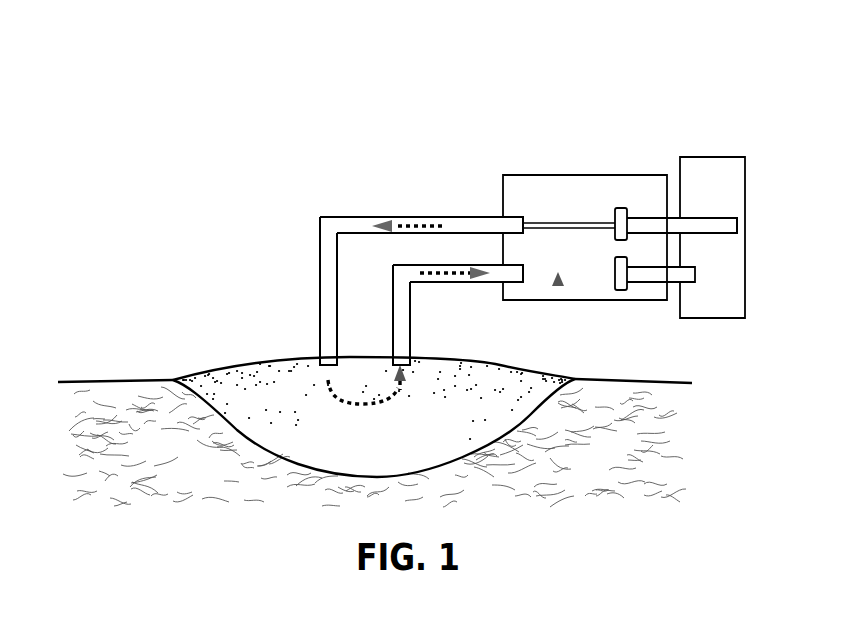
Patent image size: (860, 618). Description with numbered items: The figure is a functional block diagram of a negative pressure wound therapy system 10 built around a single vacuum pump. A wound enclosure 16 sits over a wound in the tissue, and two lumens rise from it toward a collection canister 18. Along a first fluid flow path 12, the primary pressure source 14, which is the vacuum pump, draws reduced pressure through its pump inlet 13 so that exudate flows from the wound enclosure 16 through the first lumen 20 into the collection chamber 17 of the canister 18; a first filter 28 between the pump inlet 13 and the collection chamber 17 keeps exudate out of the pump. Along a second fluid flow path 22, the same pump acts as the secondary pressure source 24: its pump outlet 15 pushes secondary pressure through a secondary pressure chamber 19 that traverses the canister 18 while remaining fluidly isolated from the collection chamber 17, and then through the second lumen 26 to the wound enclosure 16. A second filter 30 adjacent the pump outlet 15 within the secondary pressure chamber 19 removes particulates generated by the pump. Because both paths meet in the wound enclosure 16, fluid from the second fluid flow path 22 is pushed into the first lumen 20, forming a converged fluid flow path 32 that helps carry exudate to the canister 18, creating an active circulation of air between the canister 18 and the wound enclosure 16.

The NPWT system 10 is at (658, 95).
The first fluid flow path 12 is at (452, 270).
The pump inlet 13 is at (678, 272).
The primary pressure source 14 is at (712, 318).
The pump outlet 15 is at (682, 225).
The secondary pressure source 24 is at (682, 225).
The wound enclosure 16 is at (183, 371).
The collection chamber 17 is at (557, 288).
The collection canister 18 is at (520, 175).
The secondary pressure chamber 19 is at (553, 222).
The first lumen 20 is at (410, 332).
The second fluid flow path 22 is at (415, 222).
The second lumen 26 is at (338, 275).
The first filter 28 is at (619, 291).
The second filter 30 is at (621, 208).
The converged fluid flow path 32 is at (398, 388).